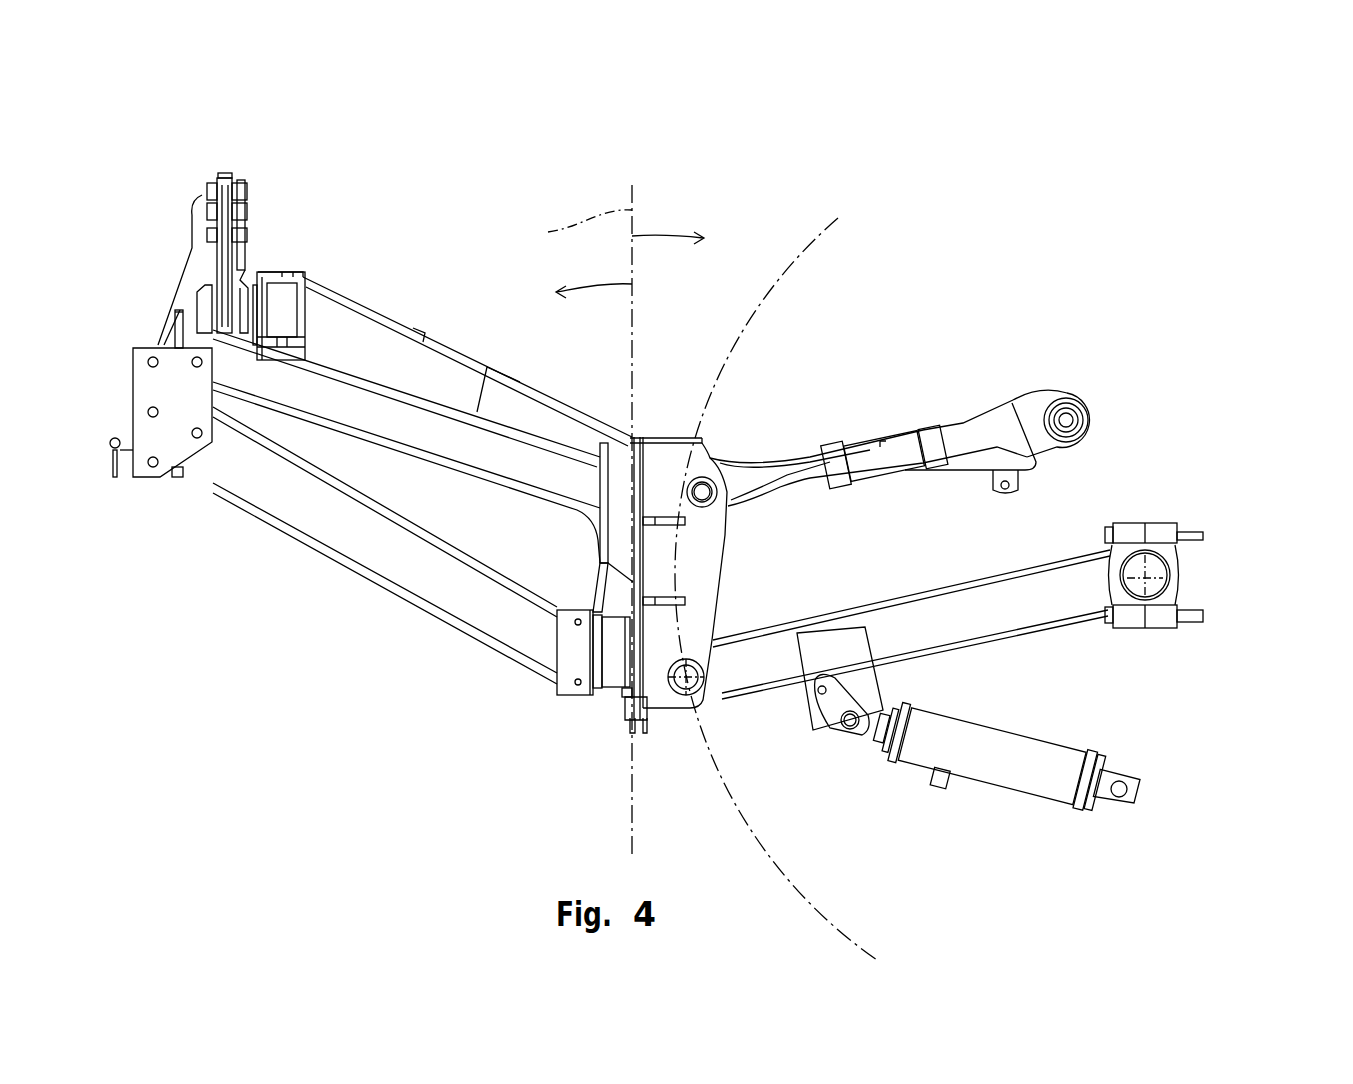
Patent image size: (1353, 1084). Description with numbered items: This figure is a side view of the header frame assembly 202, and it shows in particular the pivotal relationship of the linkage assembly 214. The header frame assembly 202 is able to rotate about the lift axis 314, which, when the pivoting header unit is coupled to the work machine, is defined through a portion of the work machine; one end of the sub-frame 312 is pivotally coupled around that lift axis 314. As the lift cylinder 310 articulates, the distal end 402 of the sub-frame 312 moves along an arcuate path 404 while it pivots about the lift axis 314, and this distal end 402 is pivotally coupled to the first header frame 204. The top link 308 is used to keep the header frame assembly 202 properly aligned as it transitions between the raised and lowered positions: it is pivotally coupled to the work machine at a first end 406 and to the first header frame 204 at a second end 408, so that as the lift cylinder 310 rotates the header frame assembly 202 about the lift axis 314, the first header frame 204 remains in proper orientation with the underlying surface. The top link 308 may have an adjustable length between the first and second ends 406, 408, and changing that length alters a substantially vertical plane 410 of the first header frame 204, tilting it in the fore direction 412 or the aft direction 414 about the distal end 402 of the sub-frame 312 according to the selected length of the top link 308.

The header frame assembly 202 is at (546, 160).
The first header frame 204 is at (697, 568).
The linkage assembly 214 is at (1002, 569).
The top link 308 is at (902, 440).
The lift cylinder 310 is at (985, 775).
The sub-frame 312 is at (972, 625).
The lift axis 314 is at (1175, 560).
The distal end 402 is at (684, 700).
The arcuate path 404 is at (805, 254).
The first end 406 is at (1067, 422).
The second end 408 is at (705, 492).
The vertical plane 410 is at (567, 230).
The fore direction 412 is at (598, 292).
The aft direction 414 is at (666, 236).